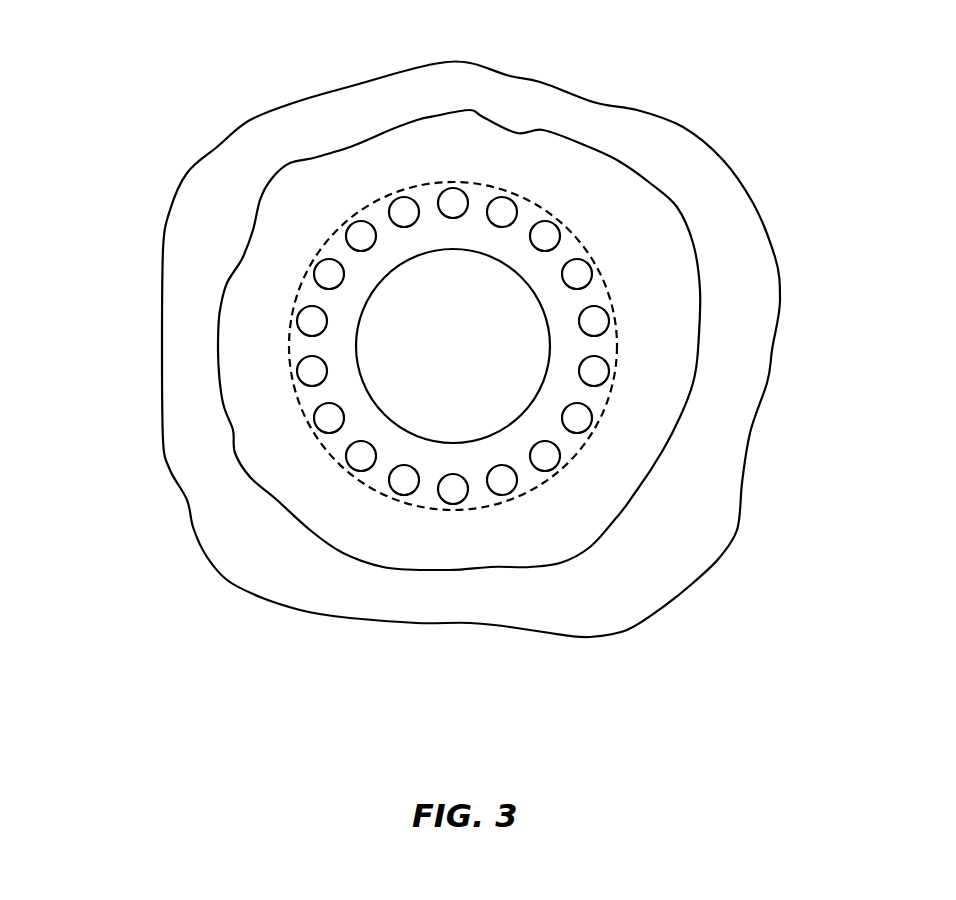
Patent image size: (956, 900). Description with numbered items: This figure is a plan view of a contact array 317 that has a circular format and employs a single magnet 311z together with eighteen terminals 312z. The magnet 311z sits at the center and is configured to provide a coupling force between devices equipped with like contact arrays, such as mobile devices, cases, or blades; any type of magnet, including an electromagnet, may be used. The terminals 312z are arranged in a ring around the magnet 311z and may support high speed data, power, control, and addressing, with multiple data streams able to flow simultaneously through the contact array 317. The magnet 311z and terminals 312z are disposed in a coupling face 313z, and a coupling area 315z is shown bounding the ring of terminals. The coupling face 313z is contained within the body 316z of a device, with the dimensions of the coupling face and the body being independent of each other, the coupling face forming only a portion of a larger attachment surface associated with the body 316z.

The magnet 311z is at (442, 333).
The terminals 312z is at (399, 212).
The coupling face 313z is at (658, 312).
The coupling area 315z is at (608, 397).
The body 316z is at (188, 172).
The contact array 317 is at (570, 173).